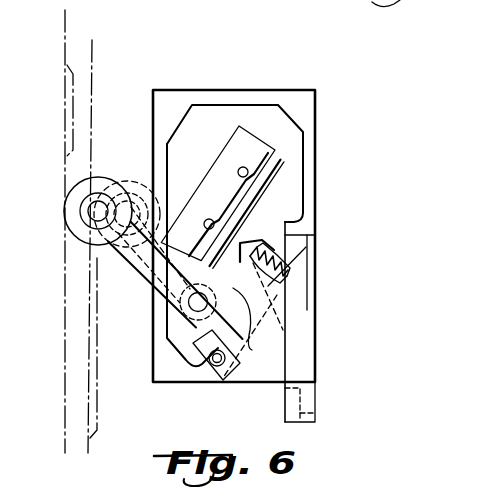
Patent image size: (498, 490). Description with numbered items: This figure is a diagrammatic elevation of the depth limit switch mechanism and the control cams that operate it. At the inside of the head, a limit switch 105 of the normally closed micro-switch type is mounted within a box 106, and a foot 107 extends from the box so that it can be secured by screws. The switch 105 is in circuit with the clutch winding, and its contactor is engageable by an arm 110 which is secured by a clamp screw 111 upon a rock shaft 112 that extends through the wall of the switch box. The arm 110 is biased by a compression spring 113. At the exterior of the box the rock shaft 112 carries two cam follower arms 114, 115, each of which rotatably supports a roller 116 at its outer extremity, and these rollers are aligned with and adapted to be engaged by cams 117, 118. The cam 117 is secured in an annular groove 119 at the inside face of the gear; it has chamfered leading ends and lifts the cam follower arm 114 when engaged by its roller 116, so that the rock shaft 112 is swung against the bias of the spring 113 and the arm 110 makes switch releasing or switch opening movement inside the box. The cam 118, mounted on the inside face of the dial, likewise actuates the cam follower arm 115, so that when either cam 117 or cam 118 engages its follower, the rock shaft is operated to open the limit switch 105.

The limit switch 105 is at (278, 165).
The box 106 is at (313, 197).
The foot 107 is at (303, 370).
The arm 110 is at (252, 299).
The clamp screw 111 is at (250, 350).
The rock shaft 112 is at (198, 302).
The compression spring 113 is at (268, 250).
The cam follower arm 114 is at (140, 182).
The cam follower arm 115 is at (128, 268).
The roller 116 is at (68, 180).
The cam 117 is at (75, 79).
The cam 118 is at (97, 383).
The annular groove 119 is at (65, 42).